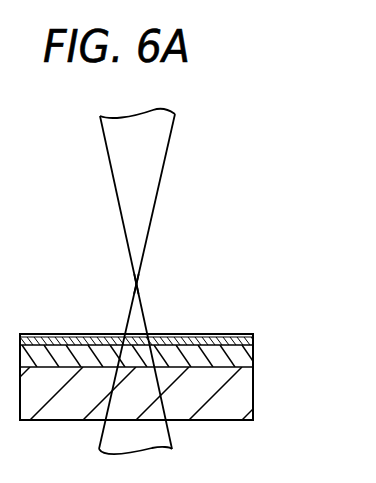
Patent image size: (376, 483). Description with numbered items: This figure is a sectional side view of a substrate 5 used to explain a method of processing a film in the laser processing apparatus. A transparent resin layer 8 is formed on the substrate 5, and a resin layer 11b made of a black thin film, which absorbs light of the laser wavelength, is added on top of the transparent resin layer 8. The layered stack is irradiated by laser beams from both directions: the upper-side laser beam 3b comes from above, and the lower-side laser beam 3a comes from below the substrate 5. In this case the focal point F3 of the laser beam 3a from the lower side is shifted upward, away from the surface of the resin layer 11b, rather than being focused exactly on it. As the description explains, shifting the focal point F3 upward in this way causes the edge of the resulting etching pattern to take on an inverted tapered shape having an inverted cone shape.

The lower-side laser beam 3a is at (147, 437).
The upper-side laser beam 3b is at (142, 160).
The focal point F3 is at (138, 285).
The resin layer 11b is at (250, 343).
The transparent resin layer 8 is at (243, 353).
The substrate 5 is at (243, 398).